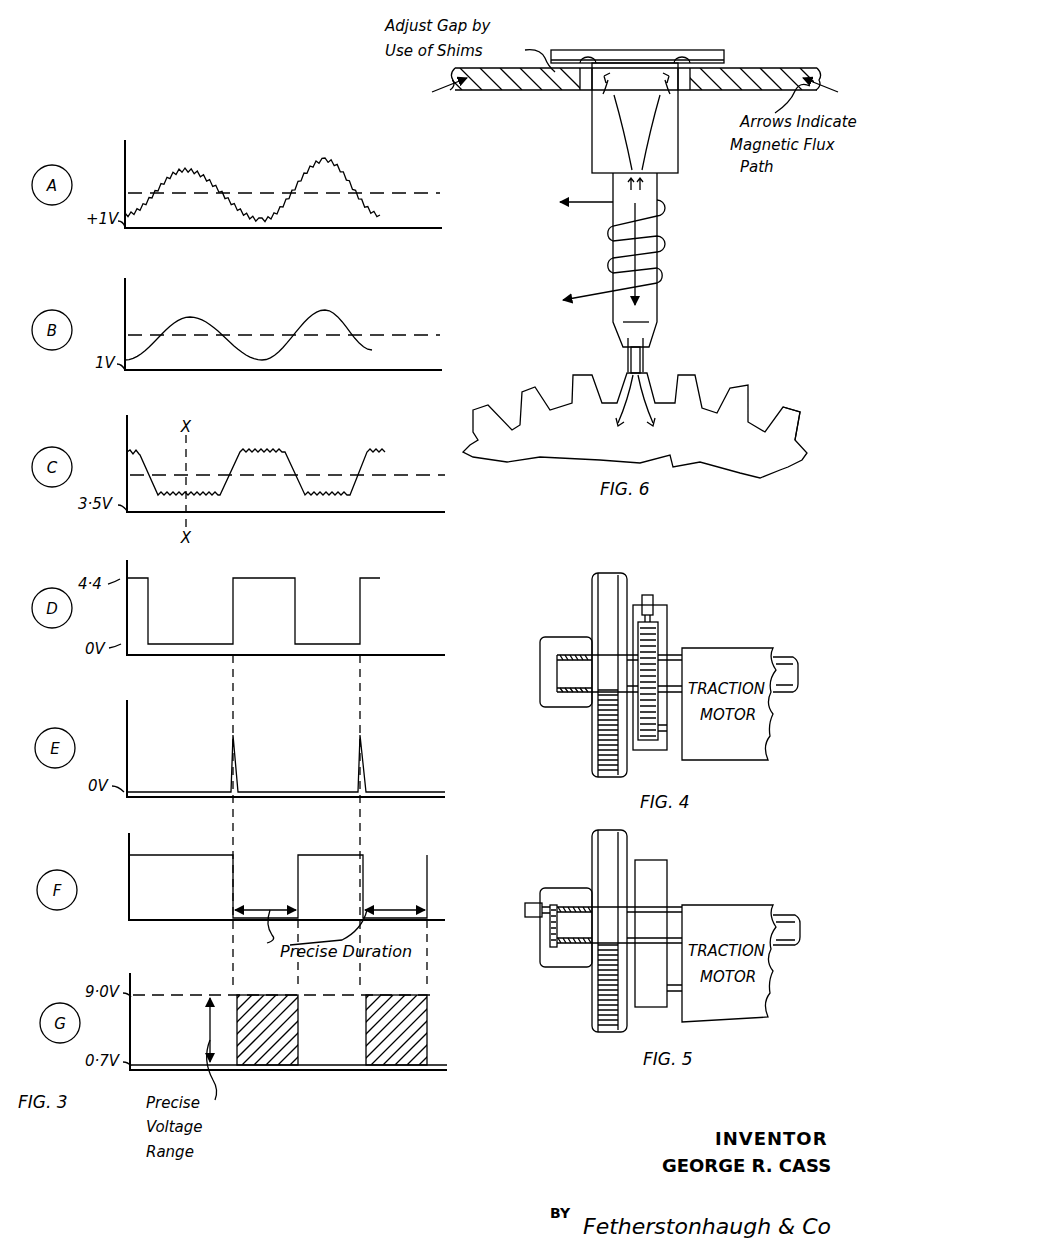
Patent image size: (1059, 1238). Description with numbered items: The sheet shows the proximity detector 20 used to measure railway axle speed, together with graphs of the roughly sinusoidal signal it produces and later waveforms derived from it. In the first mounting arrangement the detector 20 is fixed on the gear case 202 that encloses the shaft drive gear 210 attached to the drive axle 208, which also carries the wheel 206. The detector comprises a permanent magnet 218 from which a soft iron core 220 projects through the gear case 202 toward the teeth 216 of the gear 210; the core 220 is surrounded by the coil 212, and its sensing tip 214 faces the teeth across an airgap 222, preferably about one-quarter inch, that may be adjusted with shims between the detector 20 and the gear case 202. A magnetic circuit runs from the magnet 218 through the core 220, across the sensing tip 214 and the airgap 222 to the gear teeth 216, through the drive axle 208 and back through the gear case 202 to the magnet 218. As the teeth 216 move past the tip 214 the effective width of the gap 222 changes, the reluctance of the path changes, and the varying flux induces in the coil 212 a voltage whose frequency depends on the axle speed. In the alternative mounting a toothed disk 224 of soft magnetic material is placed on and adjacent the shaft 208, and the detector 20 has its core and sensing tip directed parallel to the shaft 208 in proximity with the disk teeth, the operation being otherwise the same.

In FIG. 6, the proximity detector 20 is at (717, 52).
In FIG. 4, the proximity detector 20 is at (642, 595).
In FIG. 5, the proximity detector 20 is at (525, 909).
In FIG. 6, the gear case 202 is at (765, 68).
In FIG. 4, the gear case 202 is at (667, 612).
In FIG. 5, the gear case 202 is at (667, 875).
In FIG. 4, the wheel 206 is at (625, 574).
In FIG. 5, the wheel 206 is at (625, 844).
In FIG. 4, the drive axle 208 is at (555, 668).
In FIG. 5, the drive axle 208 is at (567, 943).
In FIG. 6, the shaft drive gear 210 is at (490, 431).
In FIG. 4, the shaft drive gear 210 is at (658, 633).
In FIG. 6, the coil 212 is at (610, 233).
In FIG. 6, the sensing tip 214 is at (626, 358).
In FIG. 6, the gear teeth 216 is at (760, 406).
In FIG. 6, the permanent magnet 218 is at (680, 173).
In FIG. 6, the soft iron core 220 is at (665, 258).
In FIG. 6, the airgap 222 is at (645, 352).
In FIG. 5, the toothed disk 224 is at (548, 930).